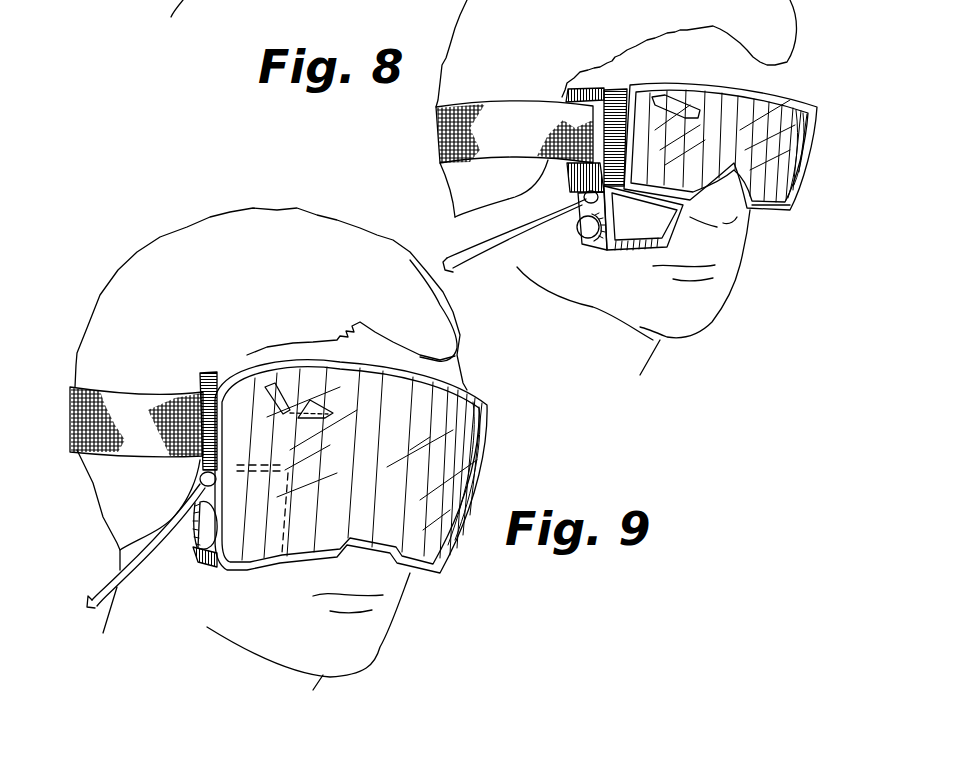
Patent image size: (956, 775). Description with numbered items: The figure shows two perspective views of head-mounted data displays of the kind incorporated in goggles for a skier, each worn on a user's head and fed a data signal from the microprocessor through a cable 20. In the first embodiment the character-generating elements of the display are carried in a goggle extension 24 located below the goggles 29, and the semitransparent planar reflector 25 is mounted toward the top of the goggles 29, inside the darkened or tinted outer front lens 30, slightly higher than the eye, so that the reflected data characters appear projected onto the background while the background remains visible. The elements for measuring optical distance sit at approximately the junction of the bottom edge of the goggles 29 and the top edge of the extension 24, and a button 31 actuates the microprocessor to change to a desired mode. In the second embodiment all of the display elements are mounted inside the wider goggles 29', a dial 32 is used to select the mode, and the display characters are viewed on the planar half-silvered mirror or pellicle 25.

In FIG. 8, the cable 20 is at (543, 200).
In FIG. 9, the cable 20 is at (120, 570).
In FIG. 8, the goggle extension 24 is at (612, 252).
In FIG. 8, the semitransparent planar reflector 25 is at (670, 100).
In FIG. 9, the semitransparent planar reflector 25 is at (307, 410).
In FIG. 8, the goggles 29 is at (727, 131).
In FIG. 9, the wider goggles 29' is at (382, 466).
In FIG. 8, the front lens 30 is at (779, 200).
In FIG. 8, the button 31 is at (577, 230).
In FIG. 9, the dial 32 is at (193, 537).